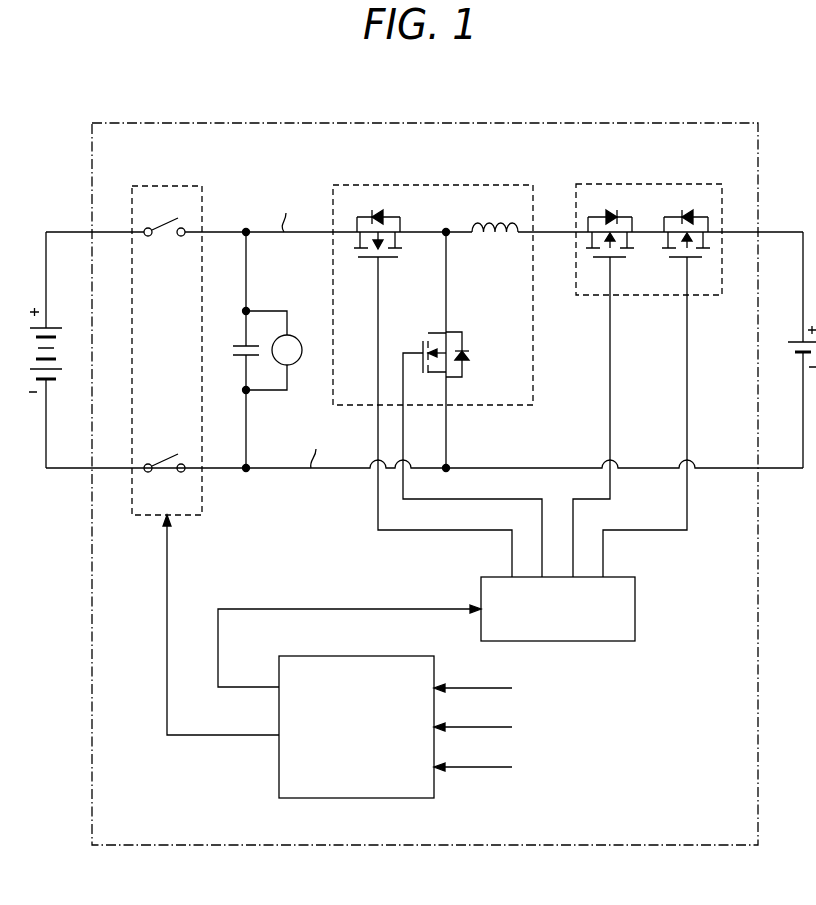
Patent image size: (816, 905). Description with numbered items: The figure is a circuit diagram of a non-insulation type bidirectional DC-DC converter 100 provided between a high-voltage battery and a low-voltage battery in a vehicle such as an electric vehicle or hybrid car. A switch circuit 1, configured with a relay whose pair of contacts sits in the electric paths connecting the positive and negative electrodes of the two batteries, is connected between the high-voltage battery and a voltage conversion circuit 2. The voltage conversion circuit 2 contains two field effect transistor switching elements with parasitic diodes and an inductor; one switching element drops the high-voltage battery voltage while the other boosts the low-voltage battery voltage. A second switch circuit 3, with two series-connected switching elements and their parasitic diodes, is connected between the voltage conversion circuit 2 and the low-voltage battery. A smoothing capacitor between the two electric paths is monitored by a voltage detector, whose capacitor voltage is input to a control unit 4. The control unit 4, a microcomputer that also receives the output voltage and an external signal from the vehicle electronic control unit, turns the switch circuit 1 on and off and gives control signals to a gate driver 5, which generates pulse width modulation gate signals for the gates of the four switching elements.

The bidirectional DC-DC converter 100 is at (608, 124).
The switch circuit 1 is at (168, 186).
The voltage conversion circuit 2 is at (446, 185).
The switch circuit 3 is at (657, 184).
The control unit 4 is at (354, 656).
The gate driver 5 is at (636, 609).